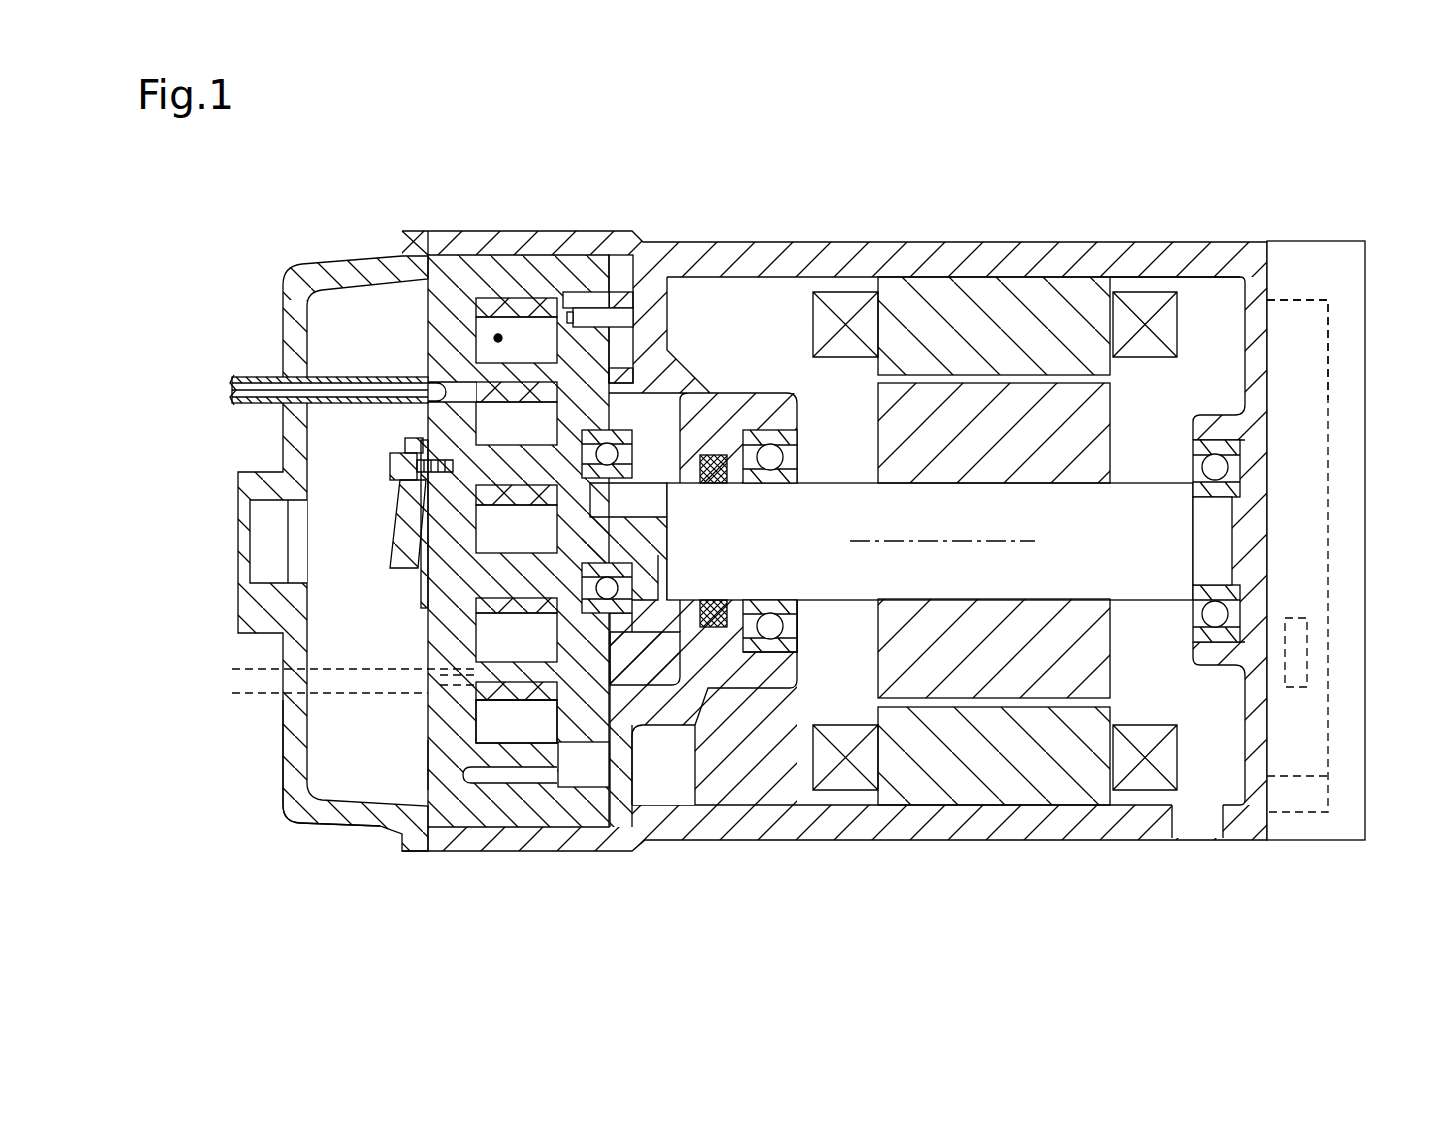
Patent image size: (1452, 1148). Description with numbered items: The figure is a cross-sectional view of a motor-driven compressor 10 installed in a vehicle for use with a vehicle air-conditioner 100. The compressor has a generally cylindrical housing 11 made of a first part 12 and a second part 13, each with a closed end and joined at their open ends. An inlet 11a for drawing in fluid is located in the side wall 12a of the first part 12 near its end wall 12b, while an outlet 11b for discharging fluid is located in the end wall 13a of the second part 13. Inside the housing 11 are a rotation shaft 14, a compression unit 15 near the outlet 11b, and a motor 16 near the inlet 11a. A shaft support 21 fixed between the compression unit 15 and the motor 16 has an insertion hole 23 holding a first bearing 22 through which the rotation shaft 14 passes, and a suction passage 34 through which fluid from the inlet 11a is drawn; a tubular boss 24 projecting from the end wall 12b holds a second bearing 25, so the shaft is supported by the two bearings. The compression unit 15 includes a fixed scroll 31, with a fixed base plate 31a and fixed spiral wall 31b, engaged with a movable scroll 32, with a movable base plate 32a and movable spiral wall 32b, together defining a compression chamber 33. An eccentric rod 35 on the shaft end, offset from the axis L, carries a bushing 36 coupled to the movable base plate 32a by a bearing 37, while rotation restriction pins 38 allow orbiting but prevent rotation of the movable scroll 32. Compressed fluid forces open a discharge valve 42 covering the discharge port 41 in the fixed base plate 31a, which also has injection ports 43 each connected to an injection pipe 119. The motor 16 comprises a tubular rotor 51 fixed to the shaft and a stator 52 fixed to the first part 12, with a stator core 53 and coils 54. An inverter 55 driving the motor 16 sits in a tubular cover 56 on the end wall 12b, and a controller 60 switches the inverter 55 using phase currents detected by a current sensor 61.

The motor-driven compressor 10 is at (797, 563).
The vehicle air-conditioner 100 is at (288, 247).
The housing 11 is at (493, 900).
The inlet 11a is at (1213, 828).
The outlet 11b is at (262, 508).
The first part 12 is at (913, 556).
The side wall 12a is at (1067, 830).
The end wall 12b is at (1258, 360).
The second part 13 is at (299, 580).
The end wall 13a is at (290, 752).
The rotation shaft 14 is at (838, 483).
The compression unit 15 is at (572, 250).
The motor 16 is at (1075, 272).
The shaft support 21 is at (782, 690).
The first bearing 22 is at (793, 643).
The insertion hole 23 is at (789, 483).
The tubular boss 24 is at (1217, 428).
The second bearing 25 is at (1238, 444).
The fixed scroll 31 is at (437, 745).
The fixed base plate 31a is at (433, 775).
The fixed spiral wall 31b is at (508, 753).
The movable scroll 32 is at (534, 600).
The movable base plate 32a is at (587, 713).
The movable spiral wall 32b is at (516, 690).
The compression chamber 33 is at (498, 338).
The suction passage 34 is at (630, 773).
The eccentric rod 35 is at (648, 490).
The bushing 36 is at (747, 690).
The bearing 37 is at (605, 560).
The rotation restriction pins 38 is at (667, 355).
The discharge port 41 is at (428, 583).
The discharge valve 42 is at (403, 514).
The injection ports 43 is at (447, 398).
The rotor 51 is at (943, 393).
The stator 52 is at (893, 300).
The stator core 53 is at (1005, 350).
The coils 54 is at (1145, 300).
The inverter 55 is at (1330, 303).
The tubular cover 56 is at (1300, 242).
The controller 60 is at (1330, 802).
The current sensor 61 is at (1310, 650).
The injection pipe 119 is at (253, 377).
The axis L is at (1038, 540).